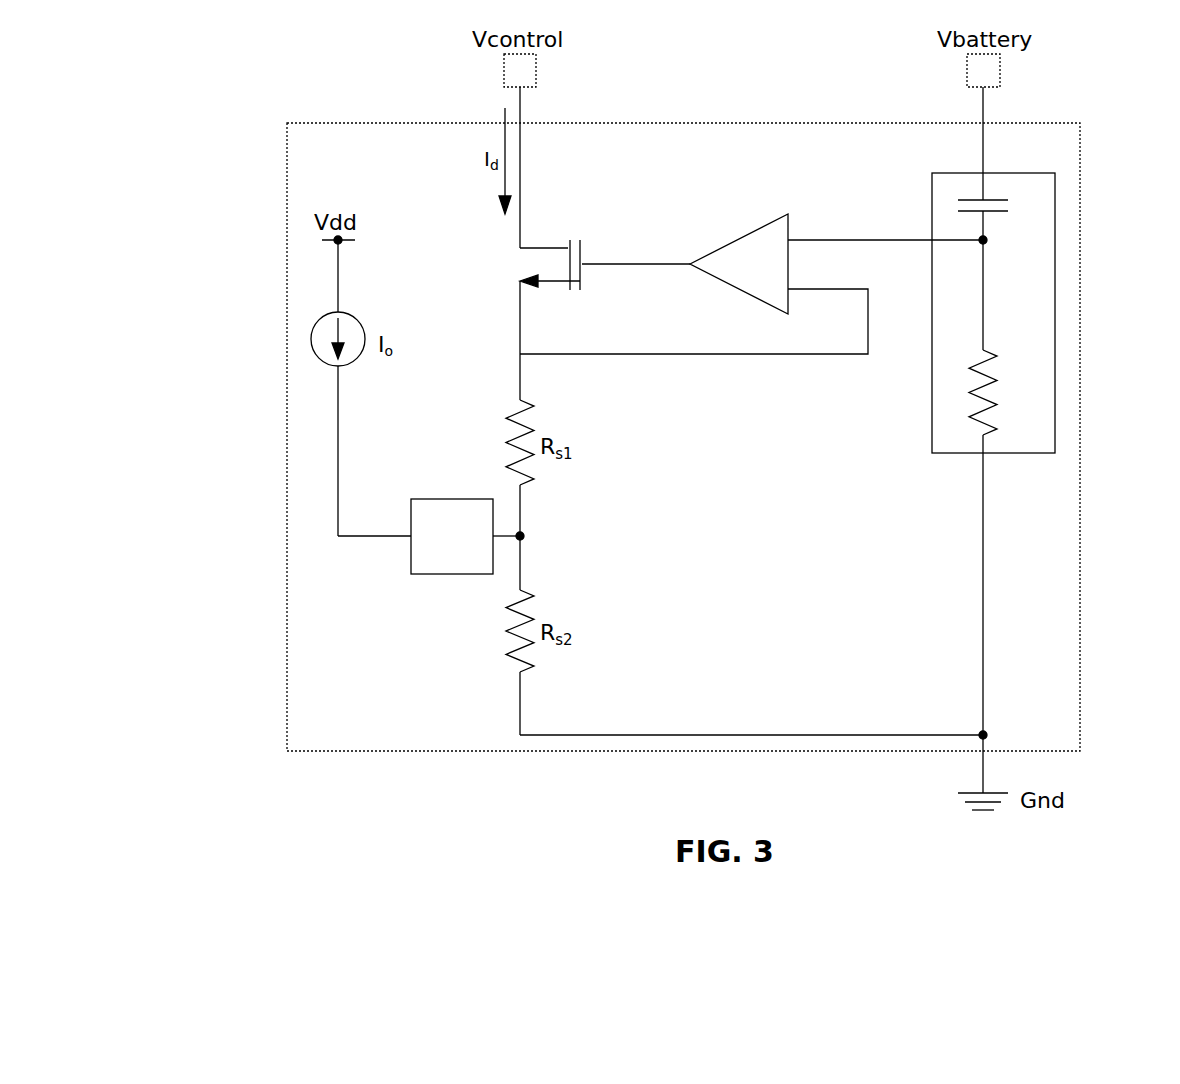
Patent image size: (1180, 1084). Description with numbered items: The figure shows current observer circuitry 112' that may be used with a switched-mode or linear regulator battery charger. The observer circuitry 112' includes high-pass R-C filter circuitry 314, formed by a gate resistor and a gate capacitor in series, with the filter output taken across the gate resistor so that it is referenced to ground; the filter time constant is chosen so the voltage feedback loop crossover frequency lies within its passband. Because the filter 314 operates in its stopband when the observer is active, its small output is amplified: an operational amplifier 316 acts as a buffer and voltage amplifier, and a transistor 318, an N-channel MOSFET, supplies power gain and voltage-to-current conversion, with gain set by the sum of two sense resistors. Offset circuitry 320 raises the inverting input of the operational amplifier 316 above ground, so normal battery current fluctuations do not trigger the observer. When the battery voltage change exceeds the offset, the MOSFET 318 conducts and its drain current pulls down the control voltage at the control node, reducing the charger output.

The current observer circuitry 112' is at (652, 403).
The high-pass R-C filter circuitry 314 is at (1055, 288).
The operational amplifier 316 is at (745, 235).
The transistor 318 is at (578, 218).
The offset circuitry 320 is at (452, 575).